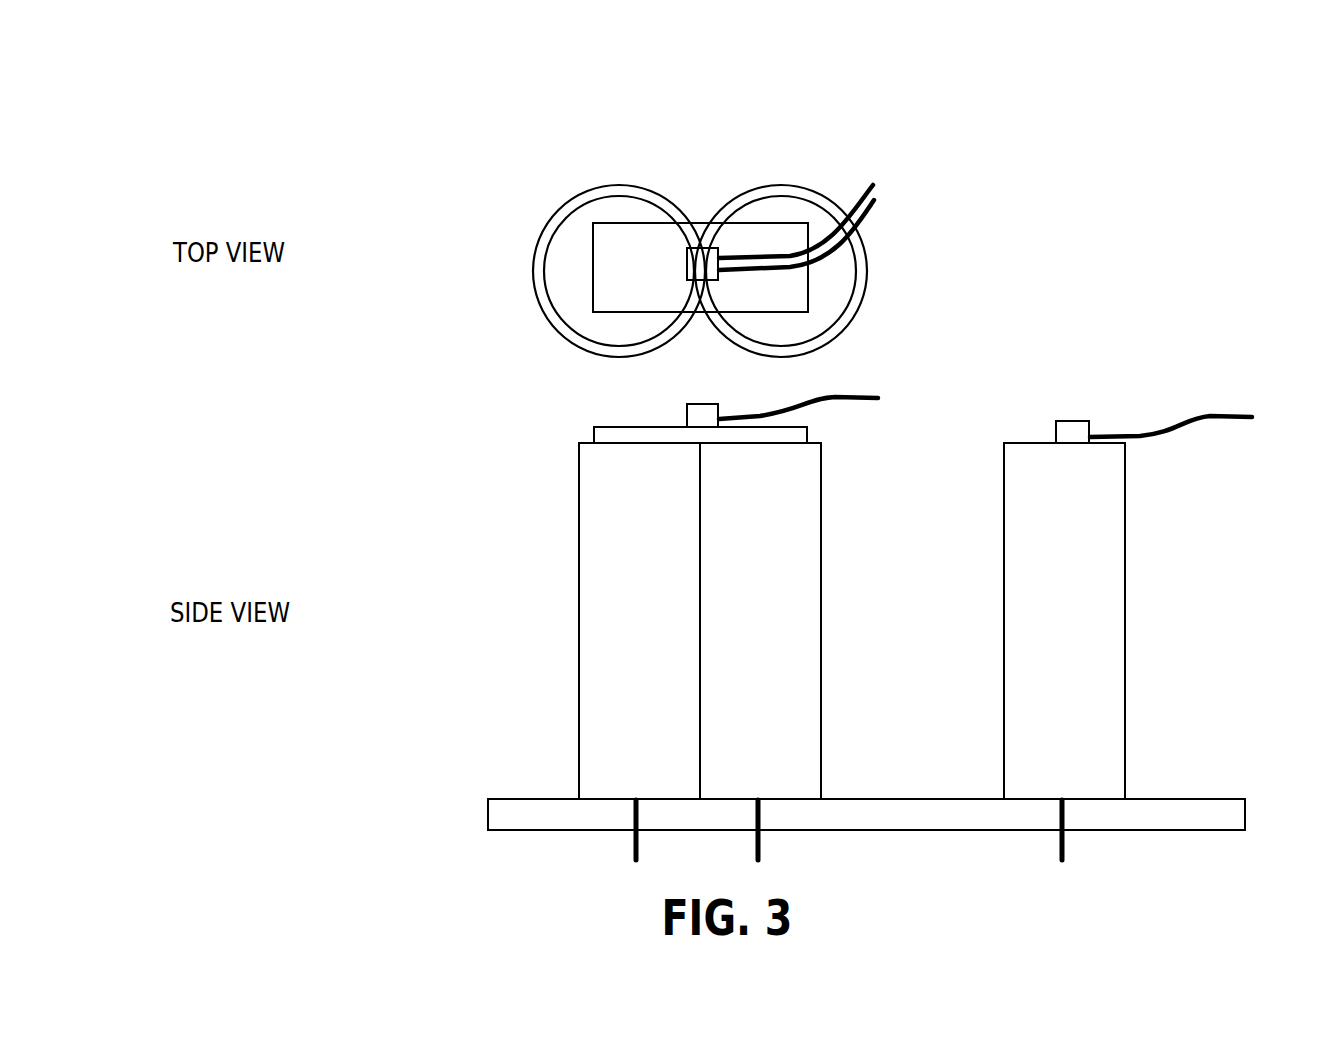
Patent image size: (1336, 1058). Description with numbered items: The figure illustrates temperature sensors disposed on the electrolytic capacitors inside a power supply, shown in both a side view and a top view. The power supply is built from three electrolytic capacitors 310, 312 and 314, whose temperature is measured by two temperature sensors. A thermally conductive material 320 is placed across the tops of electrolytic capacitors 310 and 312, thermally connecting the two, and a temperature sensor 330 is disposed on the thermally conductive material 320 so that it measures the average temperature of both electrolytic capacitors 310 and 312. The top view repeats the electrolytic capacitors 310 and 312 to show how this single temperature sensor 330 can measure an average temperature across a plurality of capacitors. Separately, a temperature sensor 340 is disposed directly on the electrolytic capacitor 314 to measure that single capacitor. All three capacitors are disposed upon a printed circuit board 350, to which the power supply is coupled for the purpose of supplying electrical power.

The electrolytic capacitor 310 is at (533, 285).
The electrolytic capacitor 312 is at (822, 622).
The electrolytic capacitor 314 is at (1125, 643).
The thermally conductive material 320 is at (594, 434).
The temperature sensor 330 is at (687, 418).
The temperature sensor 340 is at (1075, 421).
The printed circuit board 350 is at (488, 812).